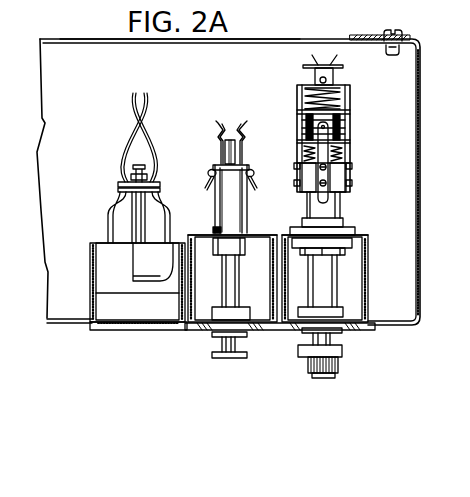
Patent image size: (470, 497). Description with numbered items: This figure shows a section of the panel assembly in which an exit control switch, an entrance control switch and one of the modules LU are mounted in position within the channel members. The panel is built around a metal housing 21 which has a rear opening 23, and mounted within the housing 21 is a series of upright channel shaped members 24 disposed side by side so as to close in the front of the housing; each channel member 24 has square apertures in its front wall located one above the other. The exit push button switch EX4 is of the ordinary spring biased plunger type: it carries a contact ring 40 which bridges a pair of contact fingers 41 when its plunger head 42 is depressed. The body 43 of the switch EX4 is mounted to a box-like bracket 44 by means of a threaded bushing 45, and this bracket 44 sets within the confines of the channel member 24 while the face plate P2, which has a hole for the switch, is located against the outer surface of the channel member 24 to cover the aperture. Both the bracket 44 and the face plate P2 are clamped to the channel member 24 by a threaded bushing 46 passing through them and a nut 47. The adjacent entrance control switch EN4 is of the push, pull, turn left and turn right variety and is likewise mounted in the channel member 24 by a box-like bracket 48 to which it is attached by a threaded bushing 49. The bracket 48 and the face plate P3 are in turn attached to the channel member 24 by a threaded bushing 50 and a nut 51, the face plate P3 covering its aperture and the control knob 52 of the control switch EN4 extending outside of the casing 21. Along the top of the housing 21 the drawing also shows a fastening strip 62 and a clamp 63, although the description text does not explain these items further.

The metal housing 21 is at (423, 104).
The rear opening 23 is at (315, 40).
The channel shaped member 24 is at (181, 247).
The contact ring 40 is at (225, 142).
The contact fingers 41 is at (238, 128).
The plunger head 42 is at (236, 356).
The switch body 43 is at (237, 218).
The box-like bracket 44 is at (212, 229).
The threaded bushing 45 is at (242, 250).
The threaded bushing 46 is at (242, 310).
The nut 47 is at (248, 336).
The box-like bracket 48 is at (362, 232).
The threaded bushing 49 is at (345, 248).
The threaded bushing 50 is at (345, 312).
The nut 51 is at (344, 332).
The control knob 52 is at (340, 363).
The fastening strip 62 is at (365, 35).
The clamp 63 is at (397, 30).
The entrance control switch EN4 is at (348, 200).
The exit push button switch EX4 is at (243, 198).
The lamp unit LU is at (128, 315).
The face plate P2 is at (192, 326).
The face plate P3 is at (371, 330).